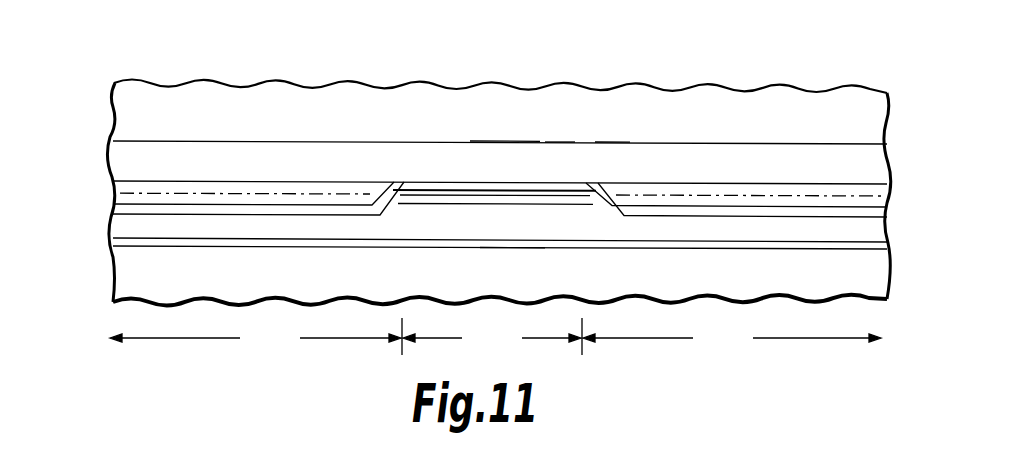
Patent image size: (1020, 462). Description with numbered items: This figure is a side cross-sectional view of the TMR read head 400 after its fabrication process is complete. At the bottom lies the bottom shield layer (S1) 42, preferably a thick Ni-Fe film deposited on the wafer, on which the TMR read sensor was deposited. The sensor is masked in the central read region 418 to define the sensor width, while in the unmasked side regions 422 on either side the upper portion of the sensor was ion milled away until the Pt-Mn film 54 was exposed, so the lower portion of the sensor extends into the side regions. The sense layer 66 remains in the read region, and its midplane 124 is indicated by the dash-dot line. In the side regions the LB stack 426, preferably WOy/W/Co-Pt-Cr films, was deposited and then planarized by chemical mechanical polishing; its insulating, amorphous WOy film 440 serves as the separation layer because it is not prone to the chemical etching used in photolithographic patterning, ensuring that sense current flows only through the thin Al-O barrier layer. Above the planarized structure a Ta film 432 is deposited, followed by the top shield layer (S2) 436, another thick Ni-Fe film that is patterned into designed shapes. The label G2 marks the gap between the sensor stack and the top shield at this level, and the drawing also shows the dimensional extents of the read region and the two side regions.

The TMR read head 400 is at (374, 78).
The top shield layer 436 is at (410, 130).
The top shield layer S2 is at (527, 130).
The second gap G2 is at (561, 160).
The Ta film 432 is at (612, 160).
The LB stack 426 is at (121, 193).
The midplane of the sense layer 124 is at (243, 196).
The WOy film 440 is at (118, 205).
The sense layer 66 is at (471, 160).
The bottom shield layer 42 is at (410, 283).
The bottom shield layer S1 is at (532, 287).
The Pt-Mn film 54 is at (555, 220).
The side regions 422 is at (495, 337).
The read region 418 is at (492, 339).